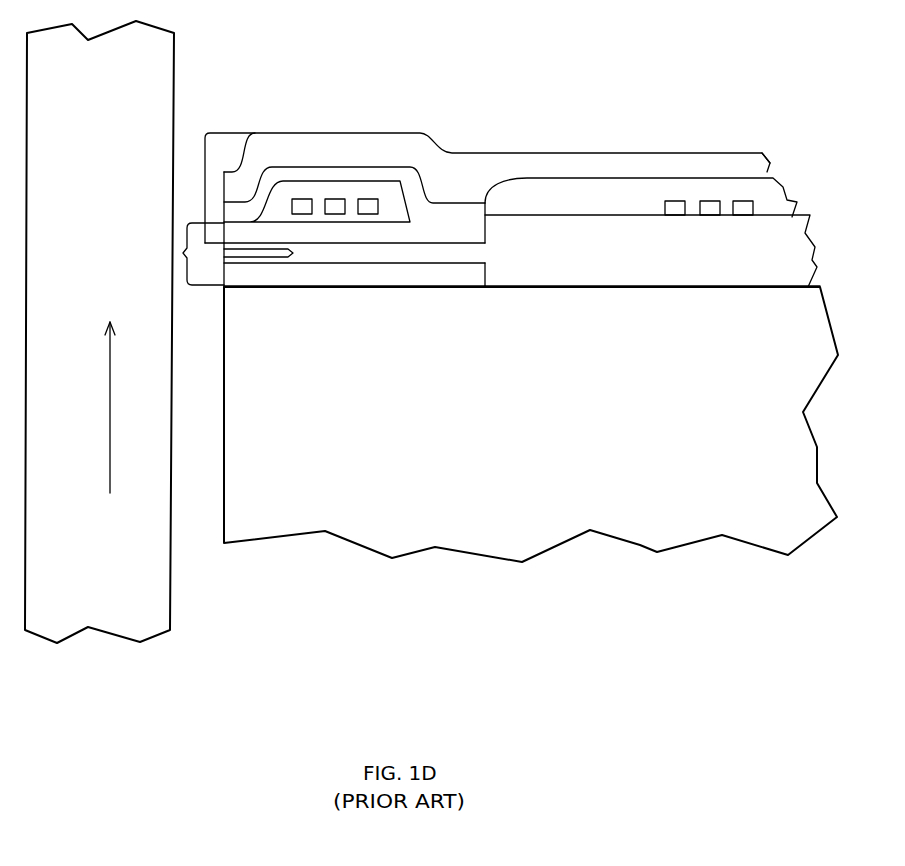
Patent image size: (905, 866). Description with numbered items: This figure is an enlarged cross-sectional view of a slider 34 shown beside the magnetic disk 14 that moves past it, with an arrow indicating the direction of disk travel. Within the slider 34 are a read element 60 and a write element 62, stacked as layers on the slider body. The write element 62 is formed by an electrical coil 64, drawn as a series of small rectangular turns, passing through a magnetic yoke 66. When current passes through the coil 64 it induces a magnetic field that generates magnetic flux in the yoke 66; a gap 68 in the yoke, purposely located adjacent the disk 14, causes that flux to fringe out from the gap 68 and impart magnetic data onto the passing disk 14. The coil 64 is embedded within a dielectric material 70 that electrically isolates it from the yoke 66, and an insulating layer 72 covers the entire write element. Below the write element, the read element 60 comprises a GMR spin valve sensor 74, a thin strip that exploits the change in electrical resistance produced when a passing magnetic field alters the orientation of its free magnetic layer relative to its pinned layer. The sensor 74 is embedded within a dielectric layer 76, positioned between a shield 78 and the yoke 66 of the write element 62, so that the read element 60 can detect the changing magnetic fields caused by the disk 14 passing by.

The disk 14 is at (158, 66).
The slider 34 is at (491, 465).
The read element 60 is at (183, 254).
The write element 62 is at (205, 186).
The electrical coil 64 is at (370, 198).
The magnetic yoke 66 is at (410, 178).
The gap 68 is at (224, 220).
The dielectric material 70 is at (400, 210).
The insulating layer 72 is at (470, 167).
The GMR spin valve sensor 74 is at (272, 257).
The dielectric layer 76 is at (518, 272).
The shield 78 is at (378, 278).